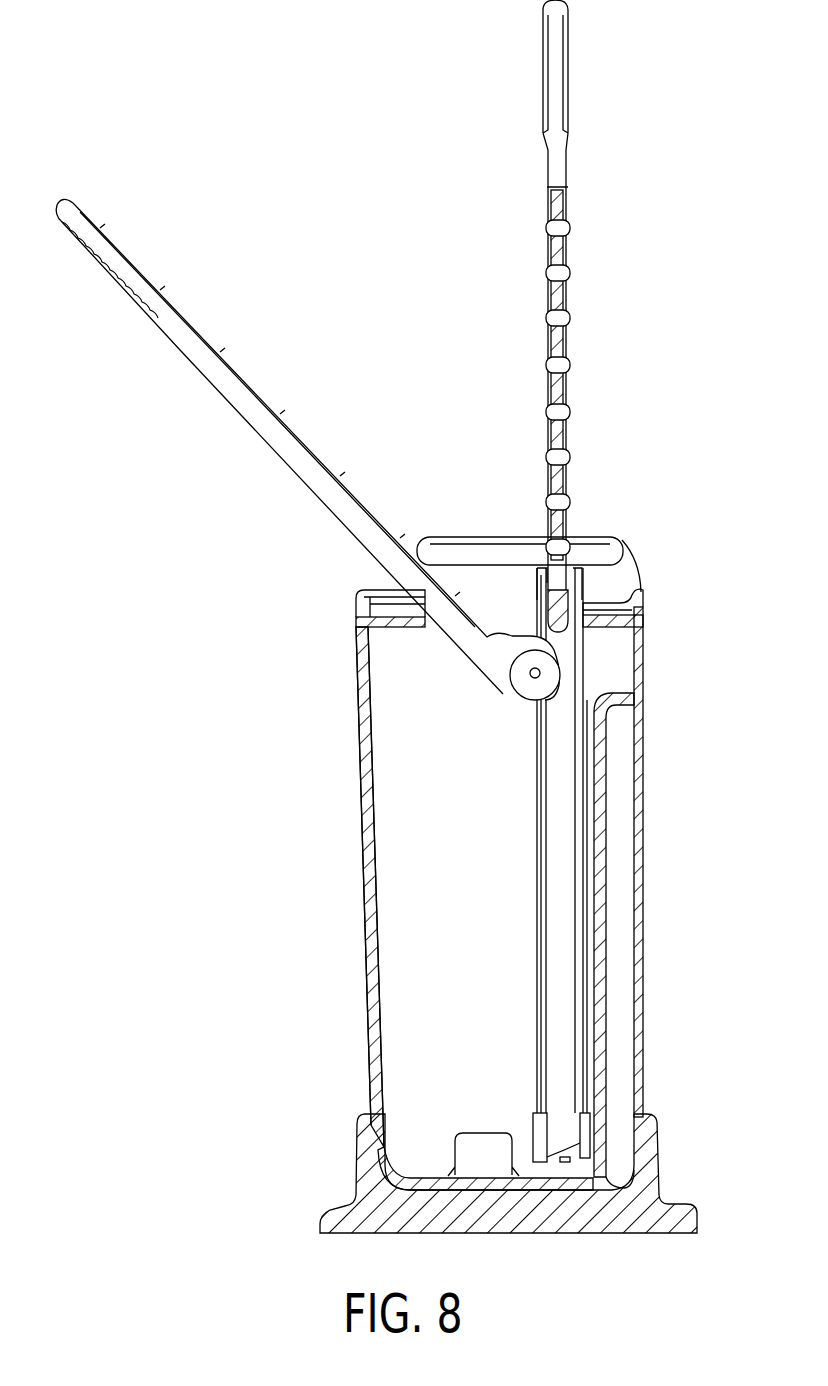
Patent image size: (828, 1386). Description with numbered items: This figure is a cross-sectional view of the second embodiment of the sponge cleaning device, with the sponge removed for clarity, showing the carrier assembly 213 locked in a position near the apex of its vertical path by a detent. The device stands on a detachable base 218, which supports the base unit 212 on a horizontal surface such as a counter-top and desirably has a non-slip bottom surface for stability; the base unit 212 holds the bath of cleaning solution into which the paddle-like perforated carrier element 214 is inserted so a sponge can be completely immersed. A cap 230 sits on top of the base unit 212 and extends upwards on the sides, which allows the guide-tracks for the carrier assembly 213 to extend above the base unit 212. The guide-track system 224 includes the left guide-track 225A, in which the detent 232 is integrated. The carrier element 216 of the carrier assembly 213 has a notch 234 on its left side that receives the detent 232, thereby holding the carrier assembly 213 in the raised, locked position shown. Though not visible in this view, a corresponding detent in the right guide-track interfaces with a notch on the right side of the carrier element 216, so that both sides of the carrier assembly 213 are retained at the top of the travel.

The base unit 212 is at (462, 889).
The carrier assembly 213 is at (539, 295).
The perforated carrier element 214 is at (308, 429).
The carrier element 216 is at (592, 295).
The detachable base 218 is at (486, 1173).
The guide-track system 224 is at (527, 865).
The left guide-track 225A is at (528, 931).
The cap 230 is at (538, 535).
The detent 232 is at (524, 555).
The notch 234 is at (518, 605).